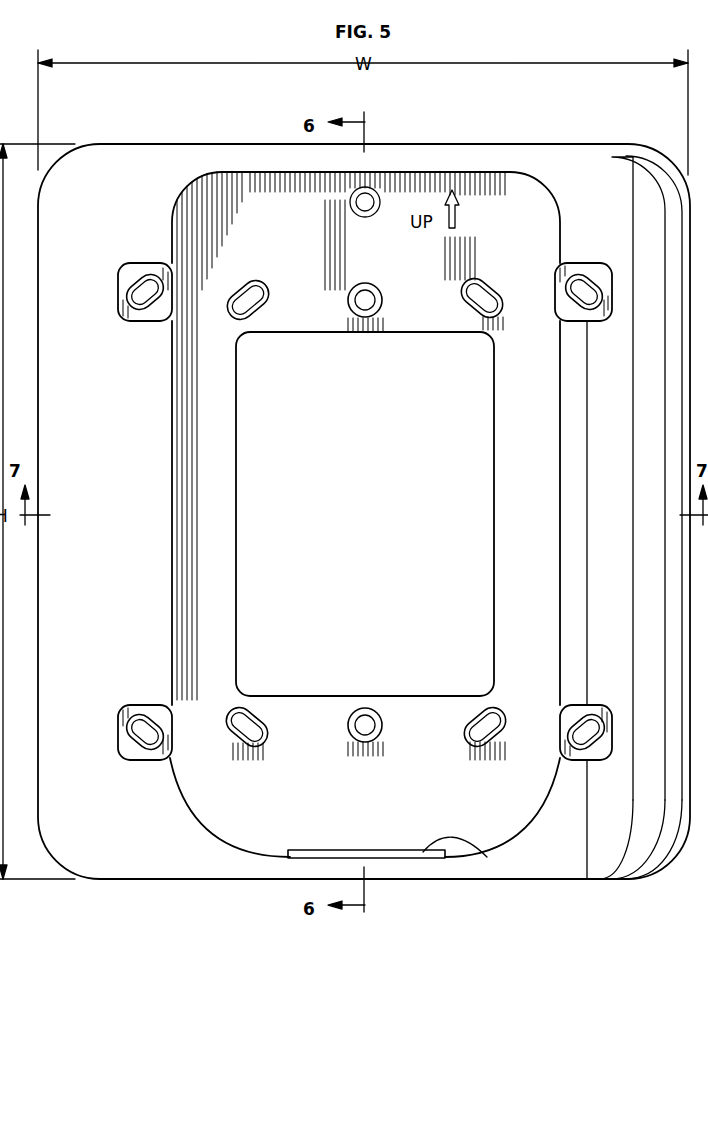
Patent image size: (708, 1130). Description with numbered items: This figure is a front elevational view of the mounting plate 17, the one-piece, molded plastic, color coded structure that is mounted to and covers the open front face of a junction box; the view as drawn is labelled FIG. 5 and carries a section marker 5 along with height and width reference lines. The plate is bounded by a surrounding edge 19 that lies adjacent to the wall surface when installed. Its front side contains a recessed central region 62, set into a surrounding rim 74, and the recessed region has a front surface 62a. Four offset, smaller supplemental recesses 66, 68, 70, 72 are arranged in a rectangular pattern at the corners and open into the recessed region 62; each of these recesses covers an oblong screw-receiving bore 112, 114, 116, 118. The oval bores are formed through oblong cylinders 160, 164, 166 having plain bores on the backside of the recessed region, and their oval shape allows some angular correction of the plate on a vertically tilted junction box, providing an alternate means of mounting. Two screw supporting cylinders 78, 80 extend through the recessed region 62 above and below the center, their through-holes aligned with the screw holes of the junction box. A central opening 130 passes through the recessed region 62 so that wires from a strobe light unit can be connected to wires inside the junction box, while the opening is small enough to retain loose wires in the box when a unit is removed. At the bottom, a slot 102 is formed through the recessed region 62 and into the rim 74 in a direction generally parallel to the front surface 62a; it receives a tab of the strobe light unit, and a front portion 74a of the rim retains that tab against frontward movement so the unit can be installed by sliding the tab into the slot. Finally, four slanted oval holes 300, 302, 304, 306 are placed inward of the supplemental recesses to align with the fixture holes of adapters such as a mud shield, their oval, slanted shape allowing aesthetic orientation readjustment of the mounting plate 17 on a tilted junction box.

The wall plate 5 is at (650, 440).
The mounting plate 17 is at (477, 146).
The surrounding edge 19 is at (666, 162).
The recessed central region 62 is at (120, 303).
The front surface of the recessed region 62a is at (389, 806).
The supplemental recess 66 is at (172, 232).
The supplemental recess 68 is at (172, 757).
The supplemental recess 70 is at (585, 293).
The supplemental recess 72 is at (562, 720).
The surrounding rim 74 is at (151, 534).
The front portion of the rim 74a is at (407, 872).
The screw supporting cylinder 78 is at (345, 317).
The screw supporting cylinder 80 is at (371, 706).
The slot 102 is at (477, 847).
The oblong screw-receiving bore 112 is at (185, 278).
The oblong screw-receiving bore 114 is at (175, 742).
The oblong screw-receiving bore 116 is at (592, 285).
The oblong screw-receiving bore 118 is at (582, 742).
The central opening 130 is at (240, 597).
The oblong cylinder 160 is at (563, 307).
The oblong cylinder 164 is at (160, 725).
The oblong cylinder 166 is at (612, 737).
The slanted oval hole 300 is at (265, 293).
The slanted oval hole 302 is at (460, 297).
The slanted oval hole 304 is at (242, 752).
The slanted oval hole 306 is at (463, 733).